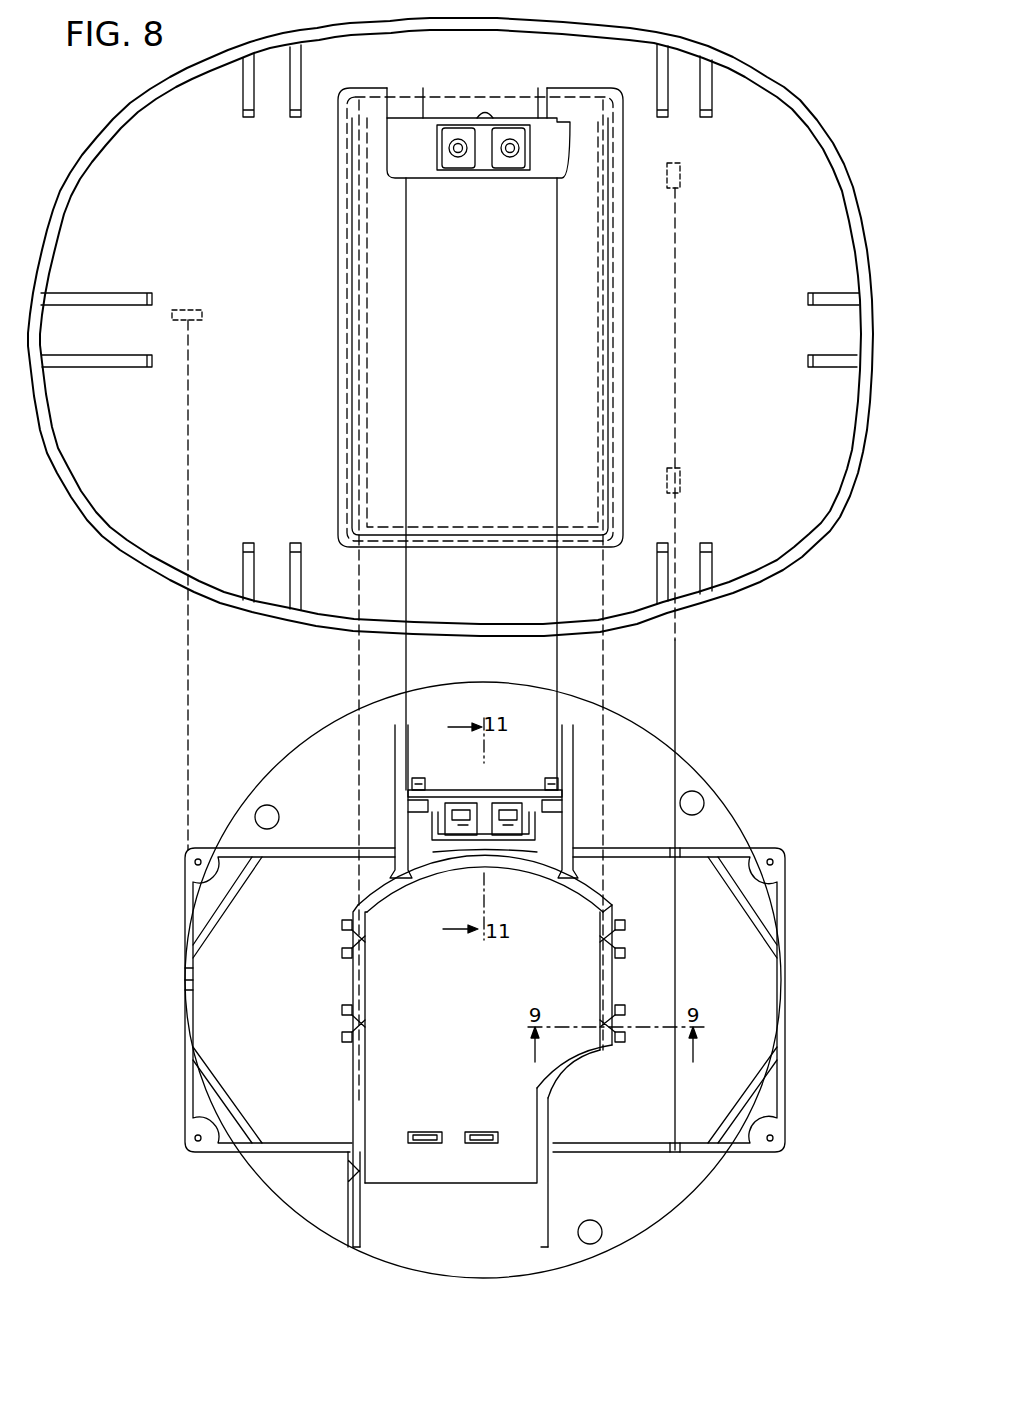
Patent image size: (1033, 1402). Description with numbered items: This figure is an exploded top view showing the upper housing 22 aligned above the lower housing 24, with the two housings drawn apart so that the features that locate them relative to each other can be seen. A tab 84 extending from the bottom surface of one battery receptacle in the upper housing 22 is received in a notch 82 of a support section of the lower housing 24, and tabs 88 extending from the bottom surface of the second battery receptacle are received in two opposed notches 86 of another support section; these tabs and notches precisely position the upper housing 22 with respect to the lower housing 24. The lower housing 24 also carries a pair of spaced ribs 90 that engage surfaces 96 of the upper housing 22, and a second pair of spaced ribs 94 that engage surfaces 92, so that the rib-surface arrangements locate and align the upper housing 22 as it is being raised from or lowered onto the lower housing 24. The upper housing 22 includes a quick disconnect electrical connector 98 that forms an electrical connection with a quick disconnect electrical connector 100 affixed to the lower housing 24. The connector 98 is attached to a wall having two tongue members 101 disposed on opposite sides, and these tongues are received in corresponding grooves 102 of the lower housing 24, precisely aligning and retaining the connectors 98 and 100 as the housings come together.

The upper housing 22 is at (645, 29).
The lower housing 24 is at (185, 850).
The notch 82 is at (674, 848).
The tab 84 is at (195, 310).
The notches 86 is at (185, 982).
The tabs 88 is at (677, 176).
The spaced ribs 90 is at (623, 938).
The surfaces 92 is at (338, 238).
The spaced ribs 94 is at (348, 936).
The surfaces 96 is at (618, 293).
The quick disconnect electrical connector 98 is at (487, 143).
The quick disconnect electrical connector 100 is at (457, 855).
The tongue members 101 is at (413, 120).
The grooves 102 is at (420, 780).